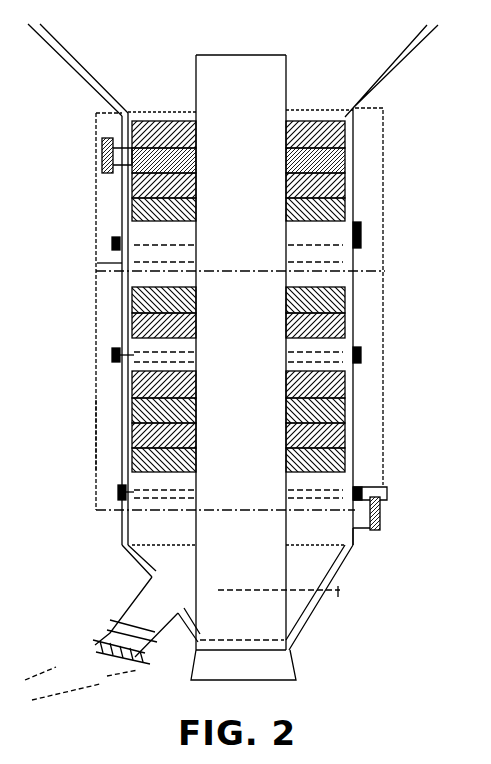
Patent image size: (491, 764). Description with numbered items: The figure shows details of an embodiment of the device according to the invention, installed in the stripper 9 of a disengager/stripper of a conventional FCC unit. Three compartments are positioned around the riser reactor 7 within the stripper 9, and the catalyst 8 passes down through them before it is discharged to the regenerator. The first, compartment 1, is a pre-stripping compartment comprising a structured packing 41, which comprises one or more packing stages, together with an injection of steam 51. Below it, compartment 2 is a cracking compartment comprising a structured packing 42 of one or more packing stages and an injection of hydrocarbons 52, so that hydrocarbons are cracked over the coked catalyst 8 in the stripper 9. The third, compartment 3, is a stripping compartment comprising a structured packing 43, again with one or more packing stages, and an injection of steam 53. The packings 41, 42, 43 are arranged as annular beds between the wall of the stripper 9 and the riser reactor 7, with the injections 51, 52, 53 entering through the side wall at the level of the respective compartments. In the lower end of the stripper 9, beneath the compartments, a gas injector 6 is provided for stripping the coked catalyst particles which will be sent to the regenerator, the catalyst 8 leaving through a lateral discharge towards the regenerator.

The pre-stripping compartment 1 is at (97, 198).
The cracking compartment 2 is at (97, 322).
The stripping compartment 3 is at (100, 456).
The structured packing 41 is at (345, 157).
The structured packing 42 is at (345, 325).
The structured packing 43 is at (345, 437).
The injection of steam 51 is at (112, 243).
The injection of hydrocarbons 52 is at (112, 357).
The injection of steam 53 is at (388, 487).
The gas injector 6 is at (333, 592).
The riser reactor 7 is at (266, 688).
The catalyst 8 is at (130, 598).
The stripper 9 is at (404, 70).